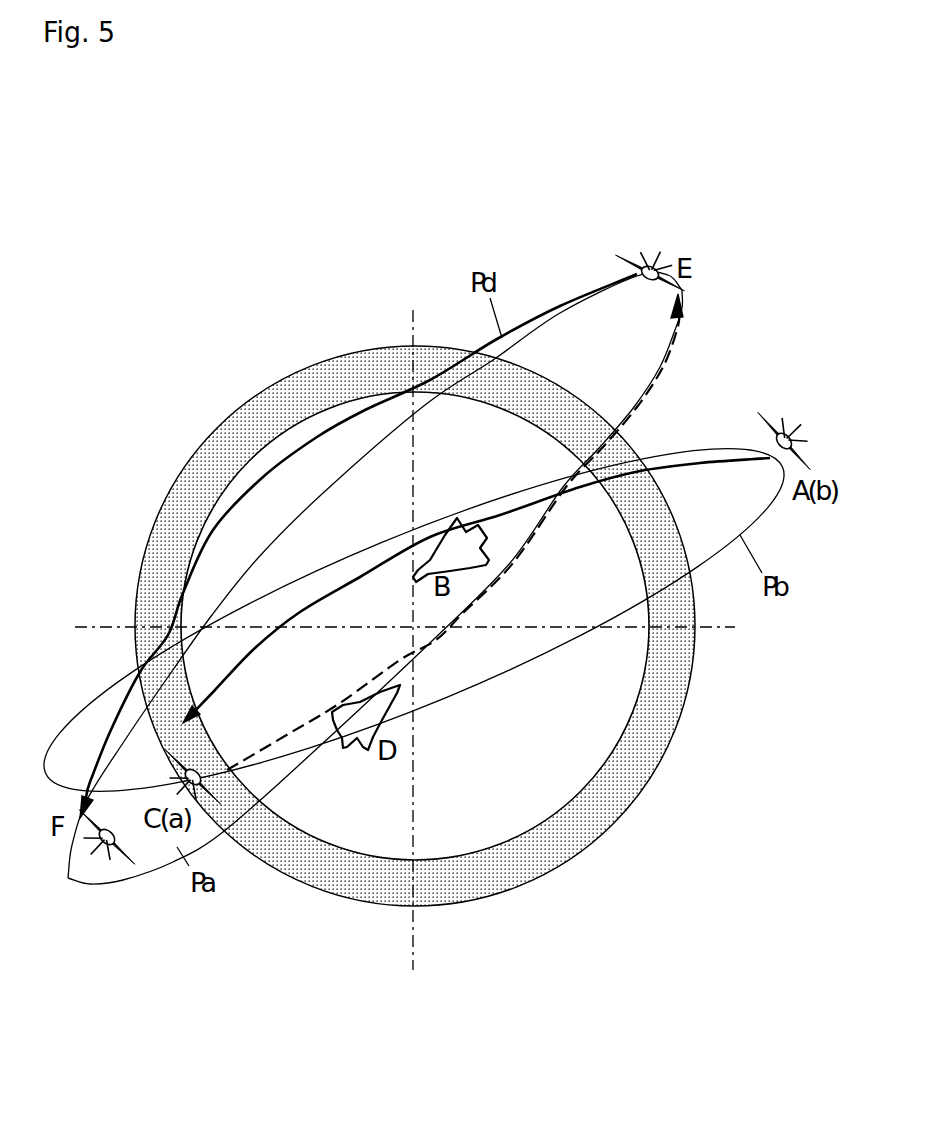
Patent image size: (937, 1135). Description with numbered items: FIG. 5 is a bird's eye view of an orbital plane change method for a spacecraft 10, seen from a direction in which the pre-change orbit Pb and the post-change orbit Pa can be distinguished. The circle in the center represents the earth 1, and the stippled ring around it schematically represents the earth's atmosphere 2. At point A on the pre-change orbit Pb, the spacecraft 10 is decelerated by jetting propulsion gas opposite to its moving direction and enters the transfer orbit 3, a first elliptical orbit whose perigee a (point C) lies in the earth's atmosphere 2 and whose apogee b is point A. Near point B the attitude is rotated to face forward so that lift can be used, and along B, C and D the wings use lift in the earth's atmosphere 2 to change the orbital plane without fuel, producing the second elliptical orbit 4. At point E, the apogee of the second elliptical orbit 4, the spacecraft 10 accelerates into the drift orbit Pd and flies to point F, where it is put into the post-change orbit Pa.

The earth 1 is at (551, 766).
The earth's atmosphere 2 is at (652, 760).
The transfer orbit 3 is at (352, 593).
The second elliptical orbit 4 is at (513, 565).
The spacecraft 10 is at (783, 435).